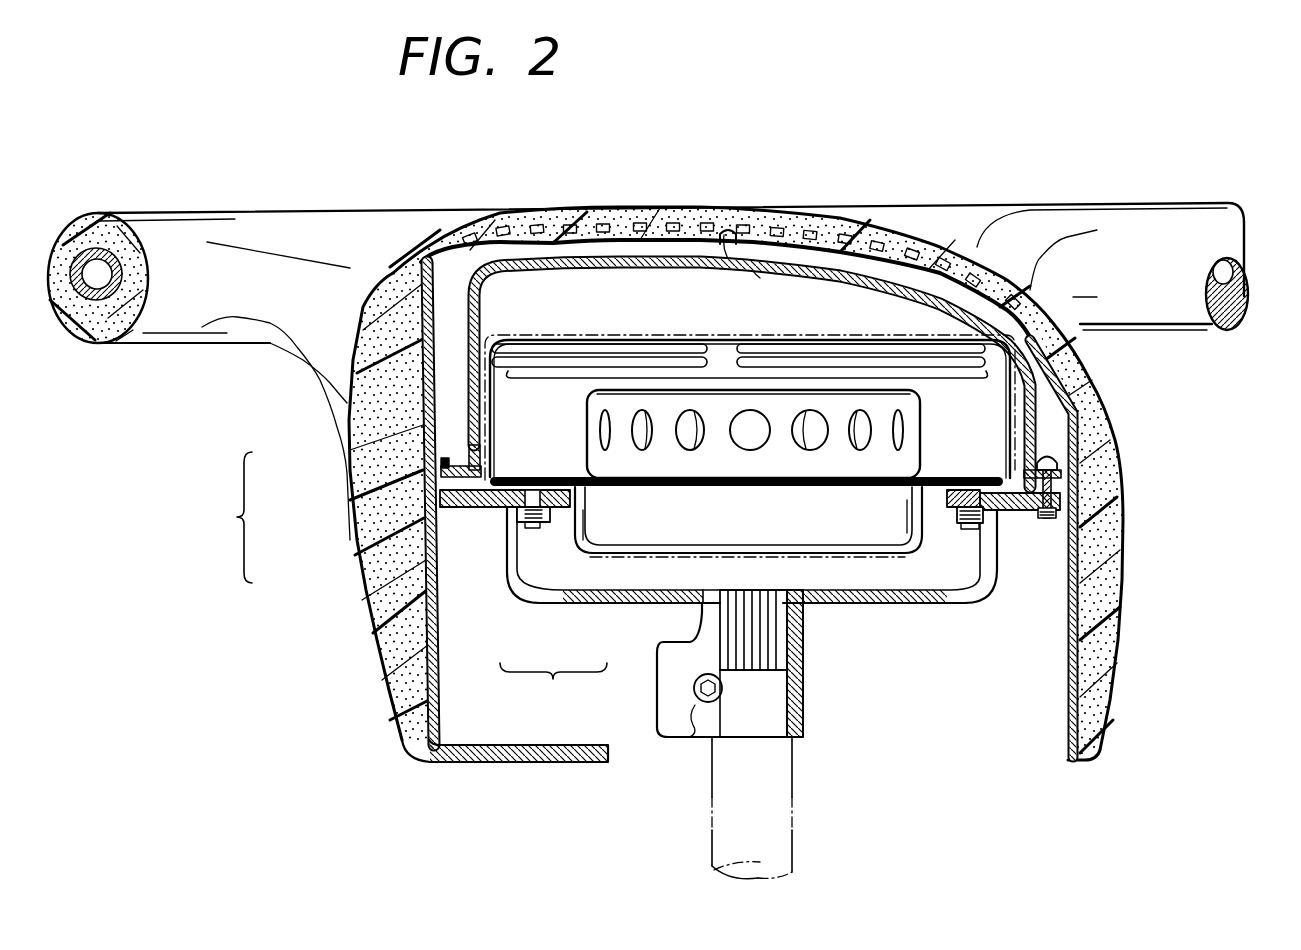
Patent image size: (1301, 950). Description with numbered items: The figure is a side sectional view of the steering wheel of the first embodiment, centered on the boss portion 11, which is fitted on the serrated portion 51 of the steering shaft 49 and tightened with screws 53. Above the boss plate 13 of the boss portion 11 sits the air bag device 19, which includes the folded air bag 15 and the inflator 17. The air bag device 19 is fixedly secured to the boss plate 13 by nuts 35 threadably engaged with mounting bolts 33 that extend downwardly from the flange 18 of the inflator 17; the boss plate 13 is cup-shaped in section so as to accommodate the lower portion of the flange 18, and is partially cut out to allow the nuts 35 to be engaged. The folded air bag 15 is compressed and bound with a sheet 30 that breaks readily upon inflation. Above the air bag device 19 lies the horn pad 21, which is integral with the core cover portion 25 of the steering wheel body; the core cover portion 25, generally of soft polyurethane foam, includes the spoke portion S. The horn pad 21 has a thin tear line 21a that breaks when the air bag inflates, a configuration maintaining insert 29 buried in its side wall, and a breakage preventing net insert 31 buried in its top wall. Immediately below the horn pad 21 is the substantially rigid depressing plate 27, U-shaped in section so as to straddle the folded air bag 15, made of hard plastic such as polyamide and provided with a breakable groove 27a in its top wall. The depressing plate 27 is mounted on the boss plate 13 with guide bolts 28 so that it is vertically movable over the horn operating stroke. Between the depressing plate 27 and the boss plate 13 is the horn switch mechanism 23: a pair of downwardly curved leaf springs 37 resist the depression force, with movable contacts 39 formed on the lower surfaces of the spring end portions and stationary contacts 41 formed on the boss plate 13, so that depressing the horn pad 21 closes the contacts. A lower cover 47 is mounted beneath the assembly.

The spoke portion S is at (266, 226).
The boss portion 11 is at (797, 693).
The boss plate 13 is at (895, 600).
The folded air bag 15 is at (566, 380).
The inflator 17 is at (630, 537).
The flange 18 is at (530, 490).
The air bag device 19 is at (553, 688).
The horn pad 21 is at (828, 240).
The tear line 21a is at (733, 230).
The horn switch mechanism 23 is at (224, 517).
The core cover portion 25 is at (106, 338).
The depressing plate 27 is at (645, 215).
The breakable groove 27a is at (753, 262).
The guide bolt 28 is at (1052, 490).
The configuration maintaining insert 29 is at (432, 592).
The sheet 30 is at (495, 507).
The breakage preventing net insert 31 is at (561, 215).
The mounting bolt 33 is at (1003, 507).
The nut 35 is at (950, 528).
The leaf spring 37 is at (450, 452).
The movable contact 39 is at (440, 488).
The stationary contact 41 is at (437, 546).
The lower cover 47 is at (530, 750).
The steering shaft 49 is at (795, 790).
The serrated portion 51 is at (770, 637).
The screw 53 is at (693, 707).